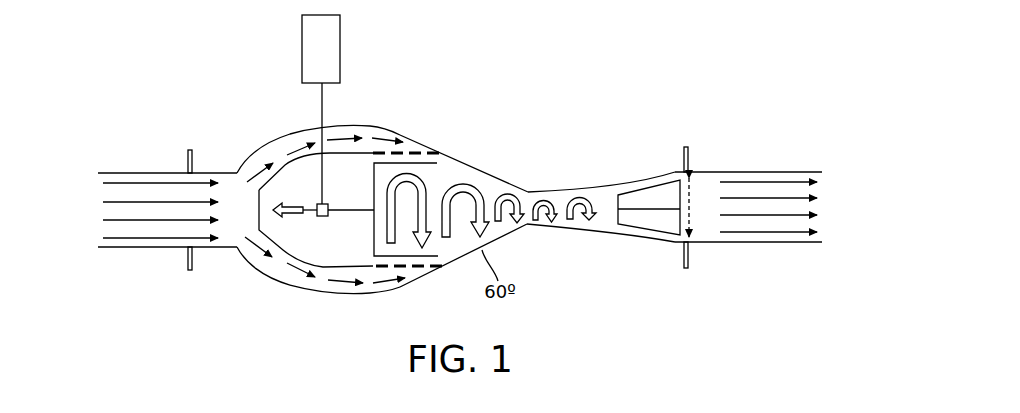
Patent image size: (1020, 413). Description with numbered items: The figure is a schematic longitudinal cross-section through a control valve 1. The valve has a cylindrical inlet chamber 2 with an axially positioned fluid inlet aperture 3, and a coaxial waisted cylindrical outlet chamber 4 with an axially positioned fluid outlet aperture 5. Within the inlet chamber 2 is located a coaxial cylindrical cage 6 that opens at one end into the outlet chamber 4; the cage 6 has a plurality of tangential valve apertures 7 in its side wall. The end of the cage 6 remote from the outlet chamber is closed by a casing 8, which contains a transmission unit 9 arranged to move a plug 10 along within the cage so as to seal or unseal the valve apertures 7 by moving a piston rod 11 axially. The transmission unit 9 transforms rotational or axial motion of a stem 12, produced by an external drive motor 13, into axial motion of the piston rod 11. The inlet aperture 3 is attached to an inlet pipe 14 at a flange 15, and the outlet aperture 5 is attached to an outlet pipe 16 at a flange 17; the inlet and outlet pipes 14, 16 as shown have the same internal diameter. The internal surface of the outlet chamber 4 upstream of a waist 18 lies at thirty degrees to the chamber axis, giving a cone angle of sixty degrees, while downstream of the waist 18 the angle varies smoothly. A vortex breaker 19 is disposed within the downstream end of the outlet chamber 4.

The control valve 1 is at (595, 87).
The inlet chamber 2 is at (287, 277).
The fluid inlet aperture 3 is at (223, 230).
The outlet chamber 4 is at (488, 186).
The fluid outlet aperture 5 is at (692, 200).
The cage 6 is at (432, 150).
The valve apertures 7 is at (420, 268).
The casing 8 is at (323, 266).
The transmission unit 9 is at (322, 216).
The plug 10 is at (406, 163).
The piston rod 11 is at (338, 210).
The stem 12 is at (320, 113).
The drive motor 13 is at (330, 40).
The inlet pipe 14 is at (143, 248).
The flange 15 is at (187, 162).
The outlet pipe 16 is at (750, 244).
The flange 17 is at (687, 270).
The waist 18 is at (521, 228).
The vortex breaker 19 is at (653, 209).